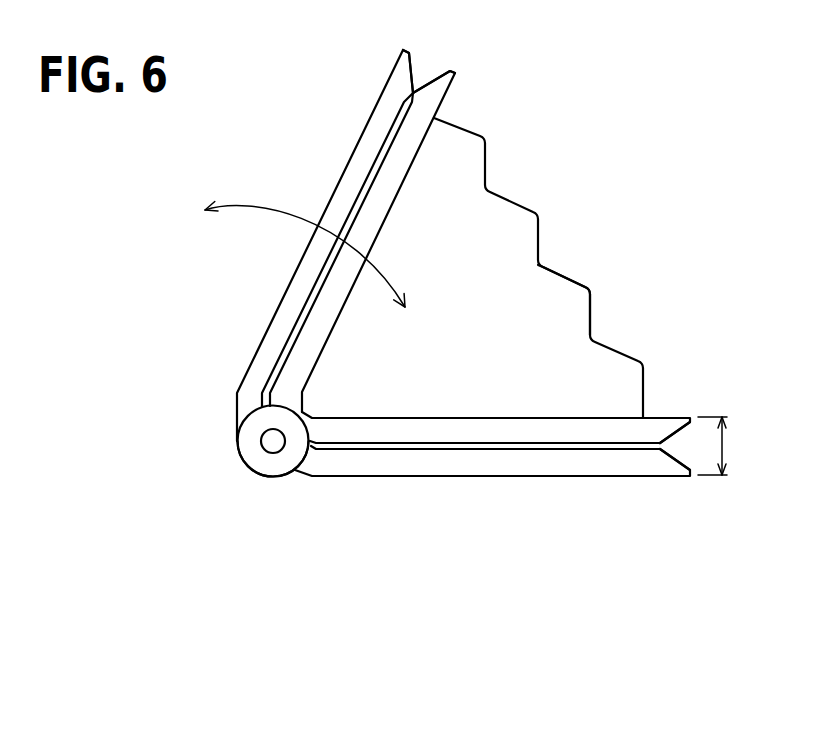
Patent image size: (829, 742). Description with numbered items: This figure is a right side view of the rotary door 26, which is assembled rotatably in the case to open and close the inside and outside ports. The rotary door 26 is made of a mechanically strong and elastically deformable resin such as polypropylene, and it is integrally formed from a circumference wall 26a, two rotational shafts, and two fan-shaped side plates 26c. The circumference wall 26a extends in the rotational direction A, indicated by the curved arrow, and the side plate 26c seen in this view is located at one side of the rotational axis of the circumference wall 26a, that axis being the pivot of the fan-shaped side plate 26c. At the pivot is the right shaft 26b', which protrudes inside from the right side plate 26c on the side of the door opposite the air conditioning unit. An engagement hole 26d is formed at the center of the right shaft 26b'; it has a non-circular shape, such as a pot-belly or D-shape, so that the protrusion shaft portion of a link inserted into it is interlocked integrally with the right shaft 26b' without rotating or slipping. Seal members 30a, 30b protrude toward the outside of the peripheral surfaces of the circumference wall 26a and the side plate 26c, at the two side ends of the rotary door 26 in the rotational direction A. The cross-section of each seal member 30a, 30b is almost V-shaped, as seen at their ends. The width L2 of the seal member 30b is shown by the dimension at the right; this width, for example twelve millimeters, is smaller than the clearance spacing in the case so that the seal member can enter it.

The rotary door 26 is at (327, 158).
The circumference wall 26a is at (540, 240).
The right shaft 26b' is at (260, 490).
The side plate 26c is at (541, 312).
The engagement hole 26d is at (268, 436).
The seal member 30a is at (433, 93).
The seal member 30b is at (602, 427).
The rotational direction A is at (243, 205).
The width of the seal member L2 is at (732, 446).